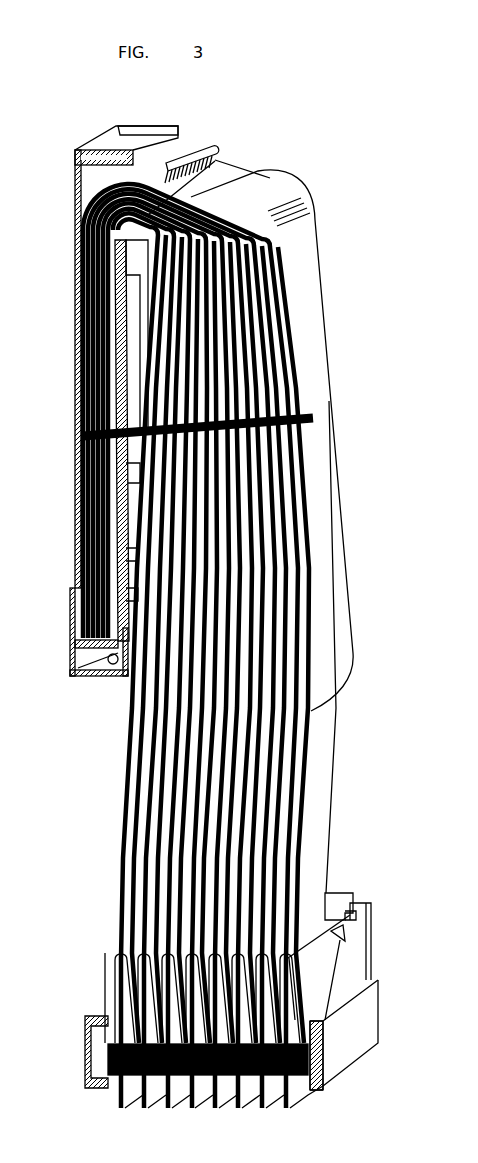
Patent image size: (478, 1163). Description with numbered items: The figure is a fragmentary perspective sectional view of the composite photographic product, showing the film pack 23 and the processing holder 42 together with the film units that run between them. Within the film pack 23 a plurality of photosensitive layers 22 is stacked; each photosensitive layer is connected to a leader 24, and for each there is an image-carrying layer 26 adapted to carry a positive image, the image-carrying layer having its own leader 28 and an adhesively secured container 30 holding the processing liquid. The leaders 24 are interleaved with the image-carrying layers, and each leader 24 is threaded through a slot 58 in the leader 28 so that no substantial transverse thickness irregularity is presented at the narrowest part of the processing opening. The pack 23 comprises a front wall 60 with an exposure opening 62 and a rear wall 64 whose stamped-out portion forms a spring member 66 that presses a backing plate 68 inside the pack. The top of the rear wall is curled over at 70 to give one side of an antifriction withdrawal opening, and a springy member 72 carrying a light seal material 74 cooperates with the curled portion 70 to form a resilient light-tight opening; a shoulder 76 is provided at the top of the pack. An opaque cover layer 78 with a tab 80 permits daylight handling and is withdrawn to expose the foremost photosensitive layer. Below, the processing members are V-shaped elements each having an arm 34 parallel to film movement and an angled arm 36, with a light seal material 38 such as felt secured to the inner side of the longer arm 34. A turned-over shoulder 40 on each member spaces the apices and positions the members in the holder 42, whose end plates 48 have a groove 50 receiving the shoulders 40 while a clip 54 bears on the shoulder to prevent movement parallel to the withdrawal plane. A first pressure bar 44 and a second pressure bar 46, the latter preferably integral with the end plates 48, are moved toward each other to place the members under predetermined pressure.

The photosensitive layer 22 is at (88, 378).
The film pack 23 is at (80, 135).
The leader 24 is at (165, 663).
The image-carrying layer 26 is at (126, 792).
The leader 28 is at (110, 1087).
The container 30 is at (110, 886).
The arm 34 is at (305, 997).
The arm 36 is at (322, 974).
The light seal material 38 is at (284, 1078).
The shoulder 40 is at (330, 925).
The holder 42 is at (373, 1035).
The first pressure bar 44 is at (336, 1050).
The second pressure bar 46 is at (77, 1042).
The end plate 48 is at (353, 938).
The groove 50 is at (340, 910).
The clip 54 is at (322, 884).
The slot 58 is at (118, 992).
The front wall 60 is at (62, 606).
The exposure opening 62 is at (63, 578).
The rear wall 64 is at (122, 667).
The spring member 66 is at (122, 468).
The backing plate 68 is at (107, 393).
The curled portion 70 is at (215, 178).
The springy member 72 is at (187, 144).
The light seal material 74 is at (207, 160).
The shoulder 76 is at (170, 127).
The opaque cover layer 78 is at (72, 320).
The tab 80 is at (316, 468).